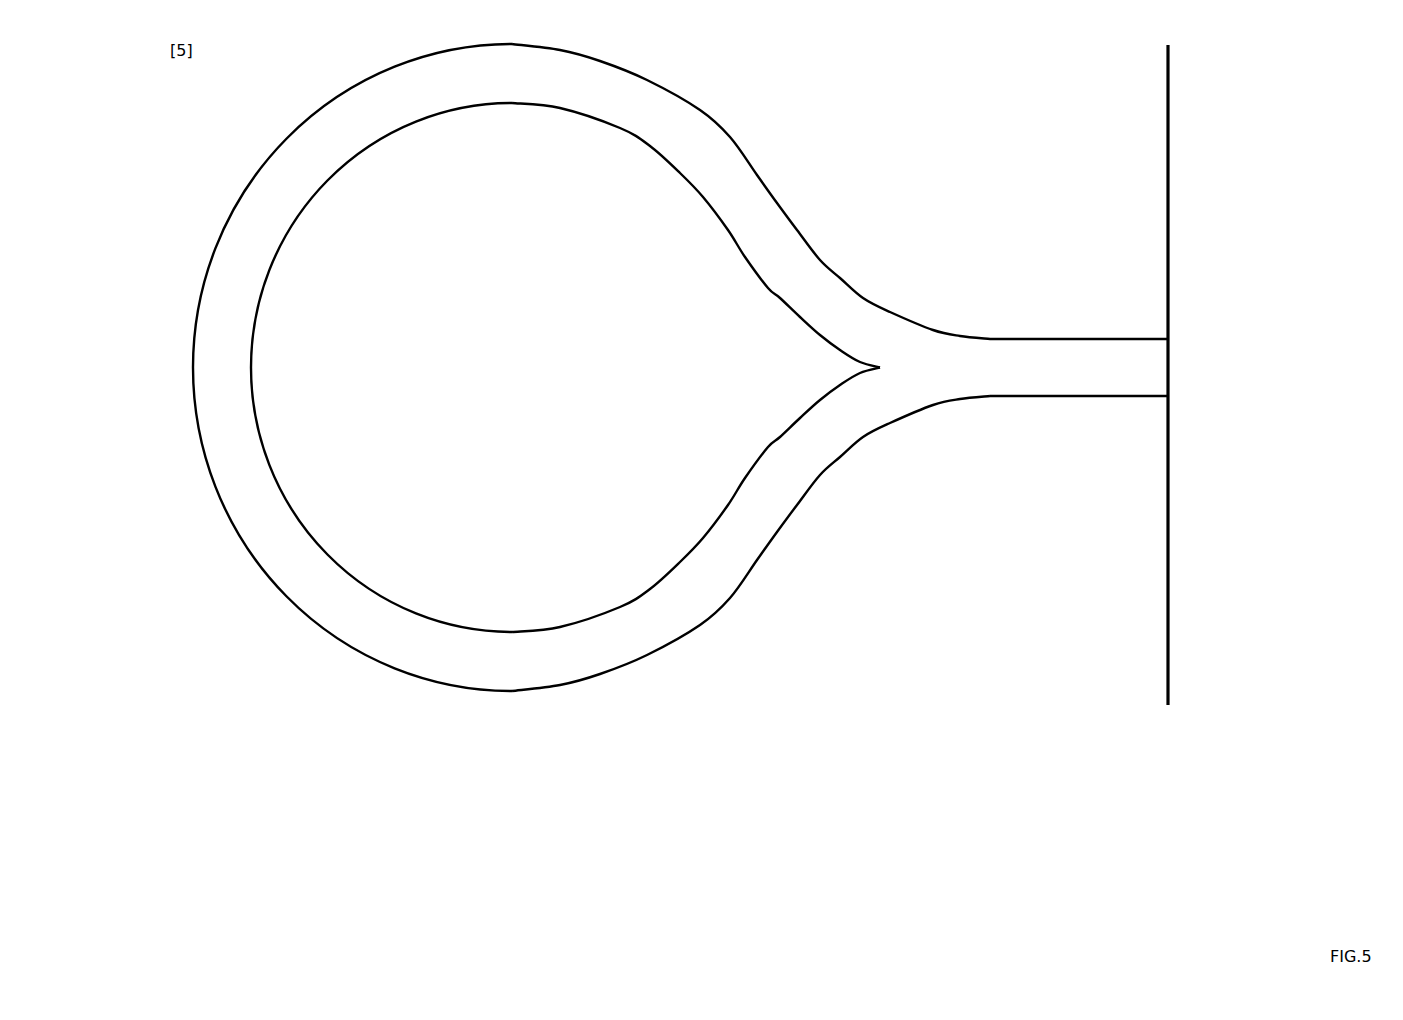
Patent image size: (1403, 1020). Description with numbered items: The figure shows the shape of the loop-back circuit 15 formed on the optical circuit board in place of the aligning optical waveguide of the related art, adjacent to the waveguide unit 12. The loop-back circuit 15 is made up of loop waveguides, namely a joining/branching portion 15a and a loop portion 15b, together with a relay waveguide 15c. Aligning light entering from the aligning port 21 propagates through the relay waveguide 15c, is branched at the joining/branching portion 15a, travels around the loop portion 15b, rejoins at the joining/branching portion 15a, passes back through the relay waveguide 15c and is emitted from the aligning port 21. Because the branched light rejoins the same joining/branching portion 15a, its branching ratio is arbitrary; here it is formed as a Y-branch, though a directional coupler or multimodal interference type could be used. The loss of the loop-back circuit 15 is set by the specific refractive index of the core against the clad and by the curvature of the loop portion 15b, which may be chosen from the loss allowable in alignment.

The waveguide unit 12 is at (1124, 82).
The loop-back circuit 15 is at (678, 367).
The joining/branching portion 15a is at (806, 191).
The loop portion 15b is at (328, 367).
The relay waveguide 15c is at (806, 543).
The aligning port 21 is at (1156, 367).